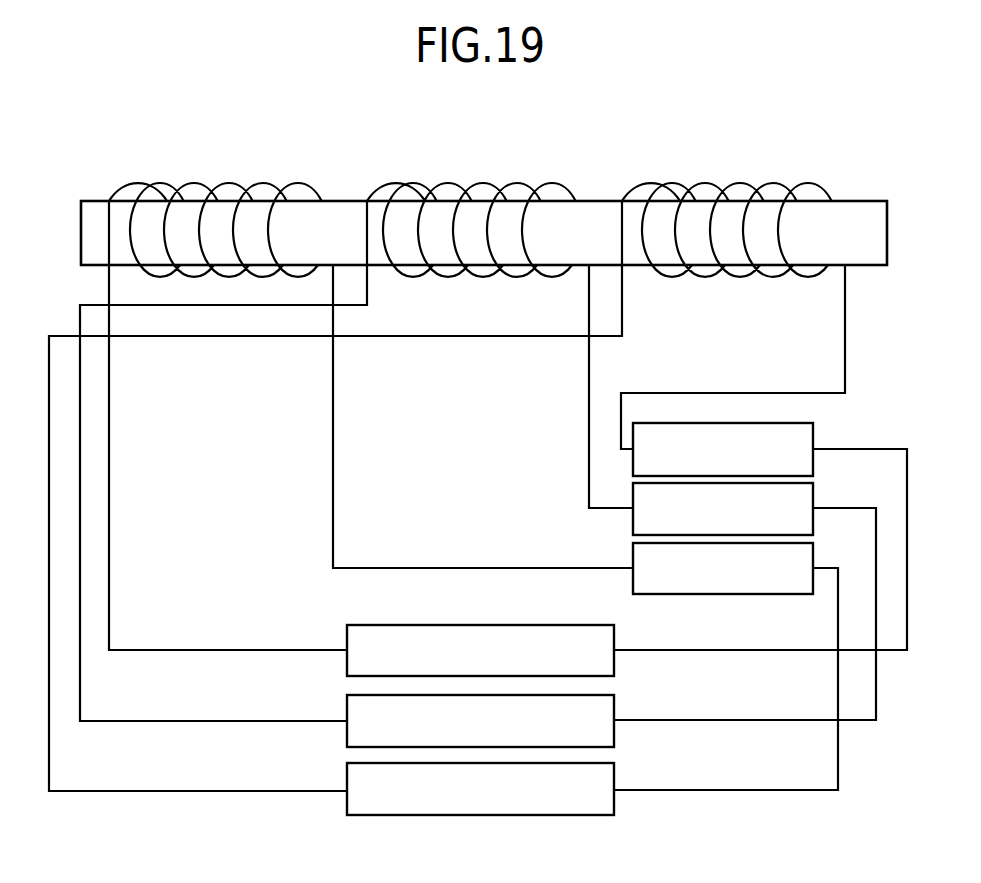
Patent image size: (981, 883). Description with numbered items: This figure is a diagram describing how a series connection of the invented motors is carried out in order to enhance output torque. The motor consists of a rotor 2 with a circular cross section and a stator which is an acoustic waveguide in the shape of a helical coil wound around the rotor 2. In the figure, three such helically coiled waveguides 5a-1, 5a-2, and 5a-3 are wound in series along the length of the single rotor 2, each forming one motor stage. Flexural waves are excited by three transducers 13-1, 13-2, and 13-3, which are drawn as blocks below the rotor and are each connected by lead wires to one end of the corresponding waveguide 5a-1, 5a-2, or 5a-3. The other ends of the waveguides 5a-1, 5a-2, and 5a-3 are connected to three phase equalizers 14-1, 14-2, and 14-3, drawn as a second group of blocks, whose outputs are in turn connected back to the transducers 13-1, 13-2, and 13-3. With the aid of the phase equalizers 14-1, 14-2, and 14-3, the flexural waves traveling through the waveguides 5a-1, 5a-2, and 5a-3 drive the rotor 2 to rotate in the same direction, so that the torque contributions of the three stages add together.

The rotor 2 is at (868, 267).
The waveguide 5a-1 is at (109, 378).
The waveguide 5a-2 is at (333, 378).
The waveguide 5a-3 is at (622, 320).
The transducer 13-1 is at (614, 628).
The transducer 13-2 is at (614, 700).
The transducer 13-3 is at (614, 770).
The phase equalizer 14-1 is at (813, 428).
The phase equalizer 14-2 is at (813, 489).
The phase equalizer 14-3 is at (768, 595).